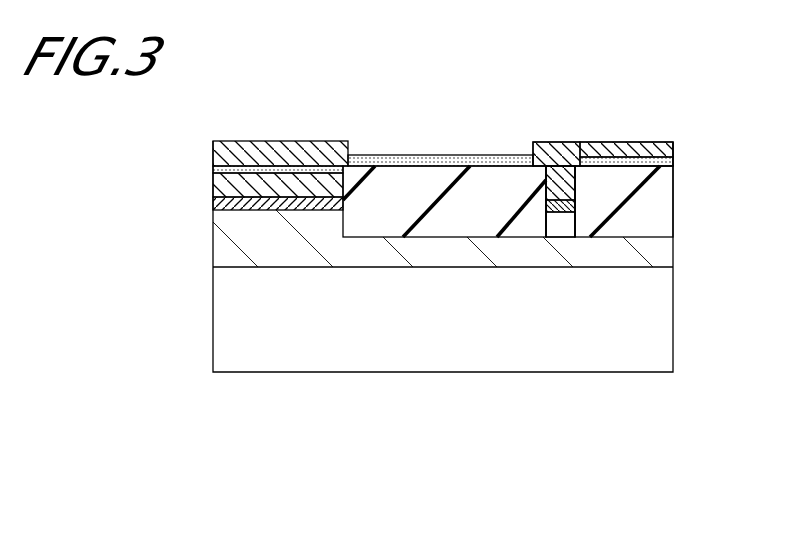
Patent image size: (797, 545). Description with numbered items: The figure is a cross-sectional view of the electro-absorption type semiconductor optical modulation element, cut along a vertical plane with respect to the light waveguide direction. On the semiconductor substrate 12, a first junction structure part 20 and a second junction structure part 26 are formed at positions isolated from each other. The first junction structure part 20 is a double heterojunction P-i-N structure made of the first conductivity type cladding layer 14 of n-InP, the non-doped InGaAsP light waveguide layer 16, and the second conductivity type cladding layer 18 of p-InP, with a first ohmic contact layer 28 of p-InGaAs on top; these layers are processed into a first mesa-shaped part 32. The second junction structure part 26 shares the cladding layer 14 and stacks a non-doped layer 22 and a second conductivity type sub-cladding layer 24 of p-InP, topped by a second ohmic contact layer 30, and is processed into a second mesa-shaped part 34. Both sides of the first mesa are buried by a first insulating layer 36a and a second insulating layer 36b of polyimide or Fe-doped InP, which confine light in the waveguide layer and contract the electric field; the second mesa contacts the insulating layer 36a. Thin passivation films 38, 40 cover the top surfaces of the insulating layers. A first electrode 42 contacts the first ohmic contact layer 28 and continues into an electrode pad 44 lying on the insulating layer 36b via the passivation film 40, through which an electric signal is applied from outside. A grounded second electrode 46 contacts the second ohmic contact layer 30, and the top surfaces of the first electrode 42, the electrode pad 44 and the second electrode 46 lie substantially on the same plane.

The semiconductor substrate 12 is at (663, 230).
The first conductivity type cladding layer 14 is at (268, 227).
The light waveguide layer 16 is at (563, 212).
The second conductivity type cladding layer 18 is at (580, 190).
The first junction structure part 20 is at (513, 402).
The non-doped layer 22 is at (280, 203).
The second conductivity type sub-cladding layer 24 is at (284, 186).
The second junction structure part 26 is at (230, 402).
The first ohmic contact layer 28 is at (547, 172).
The second ohmic contact layer 30 is at (272, 172).
The first mesa-shaped part 32 is at (483, 446).
The second mesa-shaped part 34 is at (185, 434).
The first insulating layer 36a is at (383, 222).
The second insulating layer 36b is at (668, 193).
The passivation film 38 is at (411, 155).
The passivation film 40 is at (673, 150).
The first electrode 42 is at (582, 138).
The electrode pad 44 is at (675, 138).
The second electrode 46 is at (212, 157).